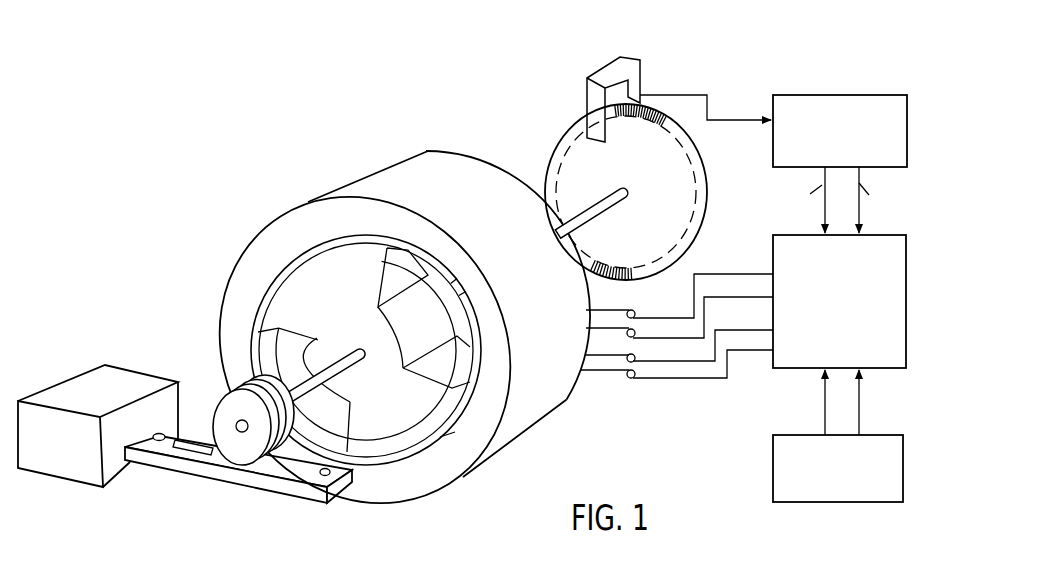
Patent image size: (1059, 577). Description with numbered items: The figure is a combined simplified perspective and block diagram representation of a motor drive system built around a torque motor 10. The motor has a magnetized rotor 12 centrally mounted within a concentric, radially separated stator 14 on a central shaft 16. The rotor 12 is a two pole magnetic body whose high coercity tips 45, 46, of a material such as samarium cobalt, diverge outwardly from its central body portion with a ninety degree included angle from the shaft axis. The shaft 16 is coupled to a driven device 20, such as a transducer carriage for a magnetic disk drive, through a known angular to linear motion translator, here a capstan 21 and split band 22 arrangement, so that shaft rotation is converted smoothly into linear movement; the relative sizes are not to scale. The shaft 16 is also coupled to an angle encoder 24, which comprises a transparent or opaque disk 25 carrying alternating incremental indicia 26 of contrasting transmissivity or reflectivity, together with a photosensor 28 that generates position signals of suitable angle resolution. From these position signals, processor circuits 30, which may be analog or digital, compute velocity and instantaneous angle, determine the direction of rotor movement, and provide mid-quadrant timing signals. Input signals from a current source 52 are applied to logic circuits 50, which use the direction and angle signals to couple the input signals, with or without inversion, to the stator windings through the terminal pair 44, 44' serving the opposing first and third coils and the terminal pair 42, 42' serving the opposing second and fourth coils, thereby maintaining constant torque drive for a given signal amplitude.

The torque motor 10 is at (388, 116).
The magnetized rotor 12 is at (397, 433).
The stator 14 is at (548, 397).
The central shaft 16 is at (314, 382).
The driven device 20 is at (129, 380).
The capstan 21 is at (228, 445).
The split band 22 is at (297, 465).
The angle encoder 24 is at (549, 135).
The disk 25 is at (690, 177).
The incremental indicia 26 is at (652, 124).
The photosensor 28 is at (587, 96).
The processor circuits 30 is at (848, 95).
The second terminal pair terminal 42 is at (679, 297).
The second terminal pair terminal 42' is at (679, 318).
The first terminal pair terminal 44 is at (679, 346).
The first terminal pair terminal 44' is at (676, 375).
The high coercity tip 45 is at (305, 265).
The high coercity tip 46 is at (416, 449).
The logic circuits 50 is at (904, 265).
The current source 52 is at (903, 449).